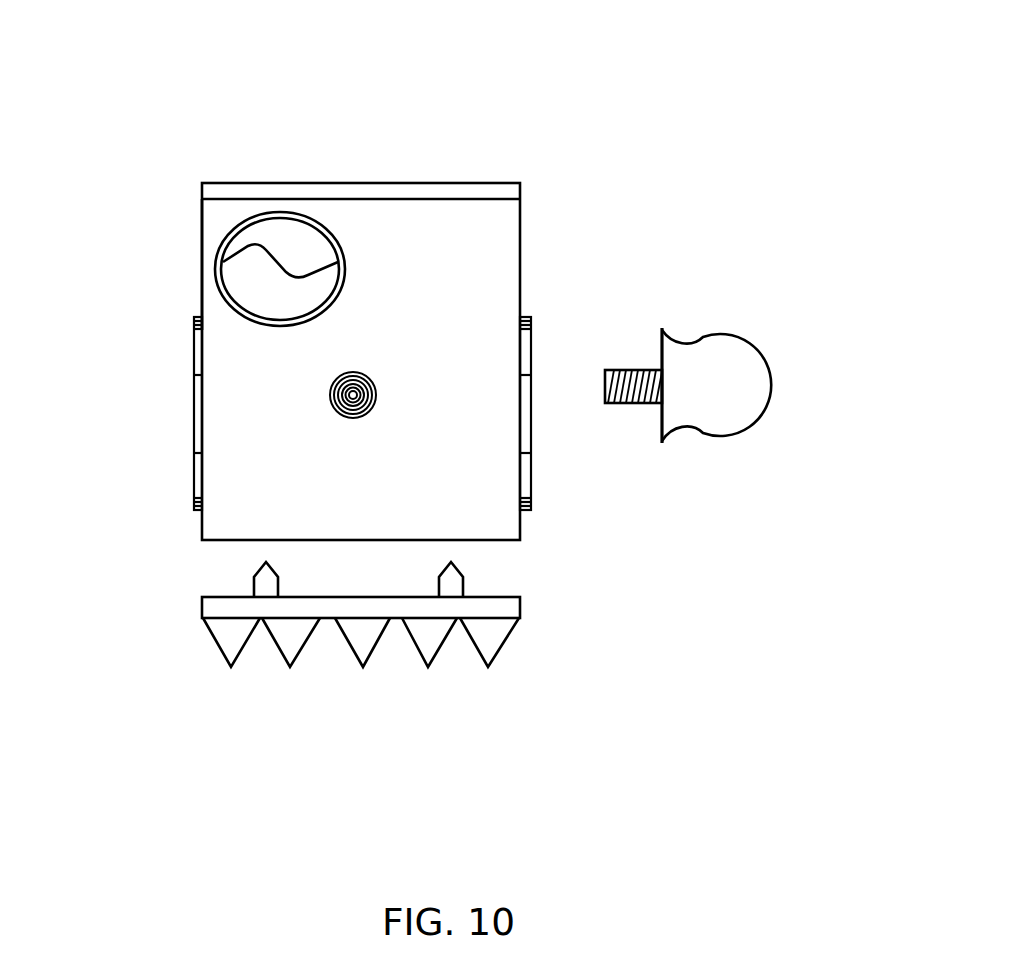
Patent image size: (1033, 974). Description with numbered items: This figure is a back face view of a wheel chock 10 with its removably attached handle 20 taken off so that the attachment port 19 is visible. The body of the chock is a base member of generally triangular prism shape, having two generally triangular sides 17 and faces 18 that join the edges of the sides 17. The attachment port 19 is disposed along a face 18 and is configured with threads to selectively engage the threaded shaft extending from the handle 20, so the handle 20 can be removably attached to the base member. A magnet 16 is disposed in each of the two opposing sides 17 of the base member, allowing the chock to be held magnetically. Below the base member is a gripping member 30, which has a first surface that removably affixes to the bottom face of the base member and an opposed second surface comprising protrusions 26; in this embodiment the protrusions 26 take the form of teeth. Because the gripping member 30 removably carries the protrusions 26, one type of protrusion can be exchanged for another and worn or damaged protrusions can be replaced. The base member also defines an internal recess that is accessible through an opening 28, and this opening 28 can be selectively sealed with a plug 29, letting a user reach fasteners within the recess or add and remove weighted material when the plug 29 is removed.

The wheel chock 10 is at (528, 145).
The magnet 16 is at (190, 437).
The side 17 is at (202, 272).
The face 18 is at (427, 510).
The attachment port 19 is at (343, 415).
The handle 20 is at (755, 430).
The protrusions 26 is at (428, 667).
The opening 28 is at (317, 240).
The plug 29 is at (280, 240).
The gripping member 30 is at (522, 608).